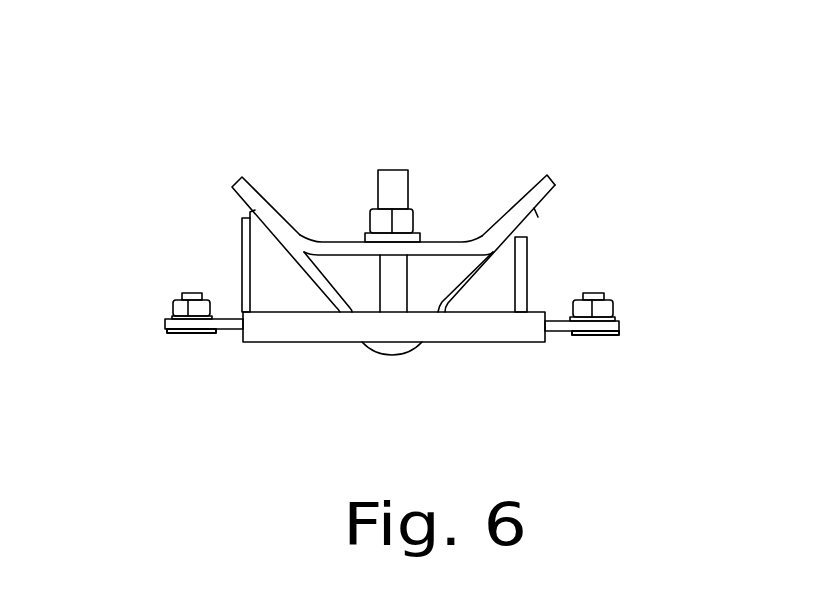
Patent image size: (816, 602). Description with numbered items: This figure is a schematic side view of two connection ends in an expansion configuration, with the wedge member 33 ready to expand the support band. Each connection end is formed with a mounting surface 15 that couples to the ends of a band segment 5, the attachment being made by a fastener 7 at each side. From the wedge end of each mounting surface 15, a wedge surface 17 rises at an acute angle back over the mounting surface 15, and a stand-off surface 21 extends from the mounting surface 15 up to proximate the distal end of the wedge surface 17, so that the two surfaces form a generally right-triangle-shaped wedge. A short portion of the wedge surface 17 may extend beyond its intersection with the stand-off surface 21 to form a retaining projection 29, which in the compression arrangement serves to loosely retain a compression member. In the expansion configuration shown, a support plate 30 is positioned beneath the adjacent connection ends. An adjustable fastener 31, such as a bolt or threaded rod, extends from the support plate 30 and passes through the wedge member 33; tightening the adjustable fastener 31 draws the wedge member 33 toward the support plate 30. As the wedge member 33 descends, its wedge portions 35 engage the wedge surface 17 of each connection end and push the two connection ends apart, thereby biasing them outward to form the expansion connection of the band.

The band segment 5 is at (183, 333).
The fastener 7 is at (592, 315).
The mounting surface 15 is at (224, 331).
The wedge surface 17 is at (325, 276).
The stand-off surface 21 is at (243, 260).
The retaining projection 29 is at (533, 217).
The support plate 30 is at (478, 332).
The adjustable fastener 31 is at (395, 188).
The wedge member 33 is at (428, 250).
The wedge portion 35 is at (537, 197).